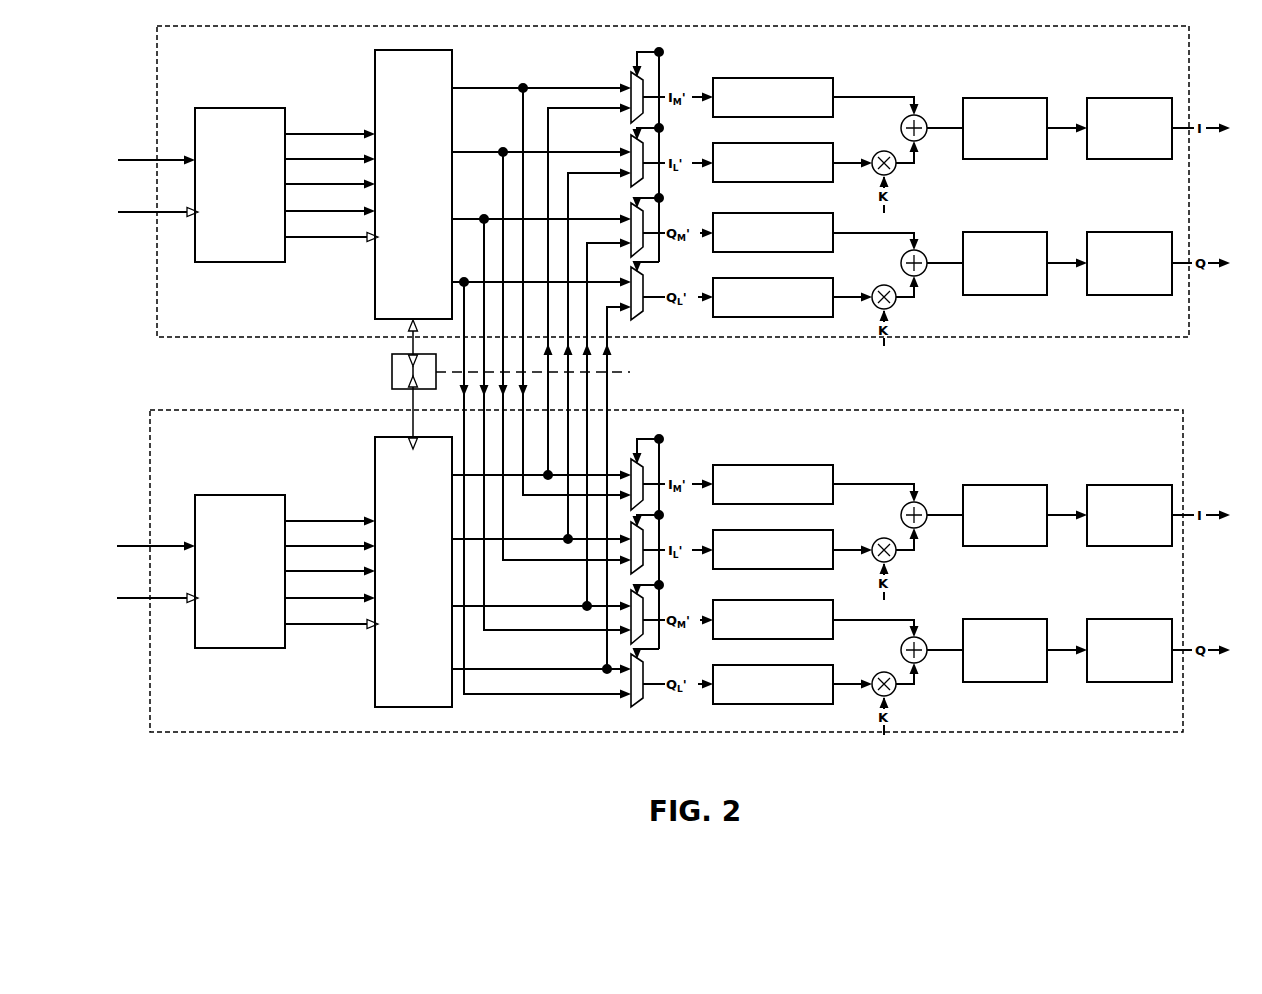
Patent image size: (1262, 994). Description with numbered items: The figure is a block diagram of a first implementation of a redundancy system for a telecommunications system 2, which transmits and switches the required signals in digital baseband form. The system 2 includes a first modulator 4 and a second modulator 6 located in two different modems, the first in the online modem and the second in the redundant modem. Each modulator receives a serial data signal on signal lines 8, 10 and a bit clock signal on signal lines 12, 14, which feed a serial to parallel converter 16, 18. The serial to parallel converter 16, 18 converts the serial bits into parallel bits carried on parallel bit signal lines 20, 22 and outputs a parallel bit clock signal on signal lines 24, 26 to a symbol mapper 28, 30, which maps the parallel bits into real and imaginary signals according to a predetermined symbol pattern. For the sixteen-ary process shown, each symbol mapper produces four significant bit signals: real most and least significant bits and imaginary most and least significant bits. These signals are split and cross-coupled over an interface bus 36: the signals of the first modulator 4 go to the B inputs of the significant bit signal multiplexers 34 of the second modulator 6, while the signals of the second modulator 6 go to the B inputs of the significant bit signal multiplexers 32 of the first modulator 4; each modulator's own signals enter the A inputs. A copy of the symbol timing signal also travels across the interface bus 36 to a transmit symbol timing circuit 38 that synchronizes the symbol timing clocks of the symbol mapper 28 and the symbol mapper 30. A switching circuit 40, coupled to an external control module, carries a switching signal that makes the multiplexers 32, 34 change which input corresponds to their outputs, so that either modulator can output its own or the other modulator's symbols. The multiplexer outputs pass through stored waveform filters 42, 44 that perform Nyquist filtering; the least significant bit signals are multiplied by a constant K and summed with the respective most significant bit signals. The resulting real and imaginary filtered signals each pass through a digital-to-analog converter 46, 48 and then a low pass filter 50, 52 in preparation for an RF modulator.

The redundancy system for a telecommunications system 2 is at (691, 408).
The first modulator 4 is at (247, 336).
The second modulator 6 is at (245, 732).
The serial data signal line 8 is at (140, 157).
The serial data signal line 10 is at (132, 542).
The bit clock signal line 12 is at (135, 215).
The bit clock signal line 14 is at (132, 598).
The serial to parallel converter 16 is at (240, 262).
The serial to parallel converter 18 is at (238, 648).
The parallel bit signal lines 20 is at (336, 133).
The parallel bit signal lines 22 is at (337, 518).
The parallel bit clock signal line 24 is at (332, 237).
The parallel bit clock signal line 26 is at (323, 623).
The symbol mapper 28 is at (375, 77).
The symbol mapper 30 is at (375, 448).
The significant bit signal multiplexers 32 is at (631, 75).
The significant bit signal multiplexers 34 is at (640, 707).
The interface bus 36 is at (630, 372).
The transmit symbol timing circuit 38 is at (390, 372).
The switching circuit 40 is at (663, 52).
The stored waveform filters 42 is at (773, 317).
The stored waveform filters 44 is at (773, 704).
The digital-to-analog converter 46 is at (1005, 232).
The digital-to-analog converter 48 is at (1005, 619).
The low pass filter 50 is at (1130, 232).
The low pass filter 52 is at (1130, 619).